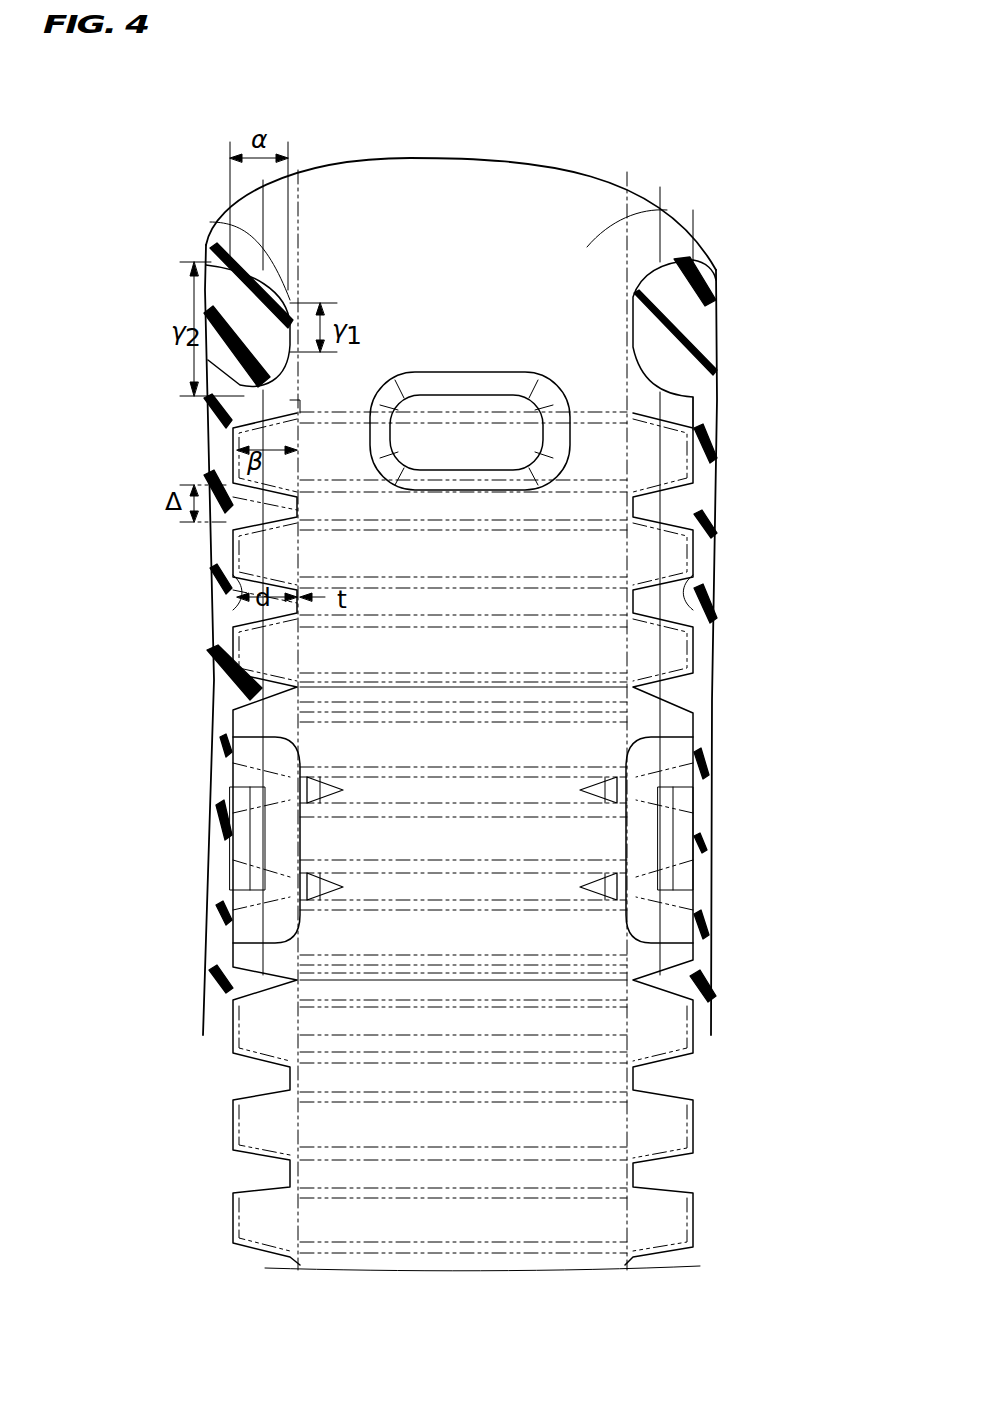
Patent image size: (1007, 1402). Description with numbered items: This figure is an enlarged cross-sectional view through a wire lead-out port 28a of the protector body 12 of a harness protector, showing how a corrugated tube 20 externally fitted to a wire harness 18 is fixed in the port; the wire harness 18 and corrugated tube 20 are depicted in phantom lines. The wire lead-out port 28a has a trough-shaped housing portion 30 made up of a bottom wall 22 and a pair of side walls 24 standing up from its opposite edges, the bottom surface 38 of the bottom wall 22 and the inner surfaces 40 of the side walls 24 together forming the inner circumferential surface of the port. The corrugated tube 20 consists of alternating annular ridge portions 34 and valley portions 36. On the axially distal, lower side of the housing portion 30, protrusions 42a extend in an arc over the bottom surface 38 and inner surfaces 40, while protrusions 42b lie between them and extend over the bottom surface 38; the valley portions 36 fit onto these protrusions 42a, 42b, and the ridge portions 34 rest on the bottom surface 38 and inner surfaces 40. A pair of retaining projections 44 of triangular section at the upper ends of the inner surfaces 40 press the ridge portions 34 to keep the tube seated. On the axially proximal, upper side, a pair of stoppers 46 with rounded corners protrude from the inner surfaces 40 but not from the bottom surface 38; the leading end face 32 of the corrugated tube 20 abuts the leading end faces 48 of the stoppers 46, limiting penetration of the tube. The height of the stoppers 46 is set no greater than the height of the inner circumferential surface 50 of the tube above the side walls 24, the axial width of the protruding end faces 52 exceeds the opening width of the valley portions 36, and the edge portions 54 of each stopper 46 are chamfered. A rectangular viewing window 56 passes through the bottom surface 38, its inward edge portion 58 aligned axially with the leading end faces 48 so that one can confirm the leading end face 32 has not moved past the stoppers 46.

The protector body 12 is at (486, 146).
The wire harness 18 is at (567, 215).
The corrugated tube 20 is at (640, 437).
The bottom wall 22 is at (518, 190).
The side wall 24 is at (207, 413).
The wire lead-out port 28a is at (481, 1025).
The housing portion 30 is at (522, 745).
The leading end face 32 is at (605, 410).
The ridge portion 34 is at (217, 433).
The valley portion 36 is at (287, 505).
The bottom surface 38 is at (590, 245).
The inner surface 40 is at (233, 617).
The protrusion 42a is at (390, 695).
The protrusion 42b is at (372, 785).
The retaining projection 44 is at (258, 840).
The stopper 46 is at (243, 313).
The leading end face 48 is at (232, 378).
The inner circumferential surface 50 is at (298, 420).
The protruding end face 52 is at (290, 327).
The edge portion 54 is at (265, 310).
The viewing window 56 is at (470, 465).
The edge portion 58 is at (463, 390).